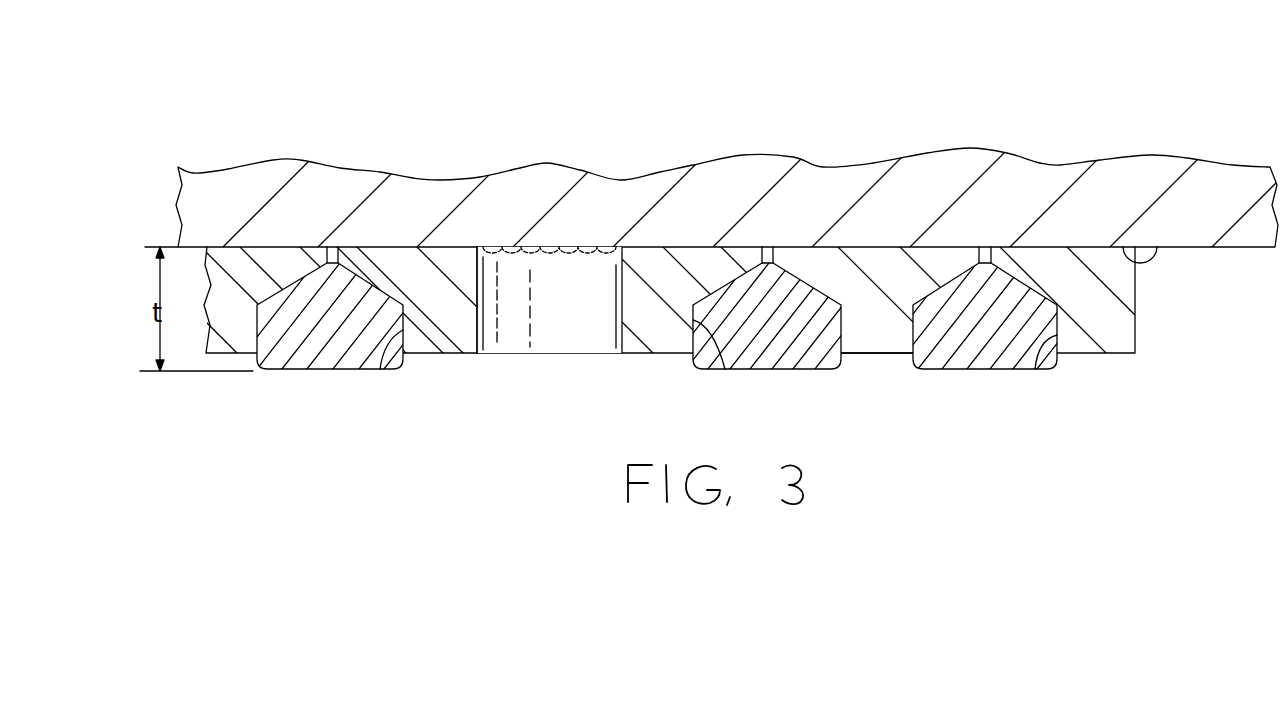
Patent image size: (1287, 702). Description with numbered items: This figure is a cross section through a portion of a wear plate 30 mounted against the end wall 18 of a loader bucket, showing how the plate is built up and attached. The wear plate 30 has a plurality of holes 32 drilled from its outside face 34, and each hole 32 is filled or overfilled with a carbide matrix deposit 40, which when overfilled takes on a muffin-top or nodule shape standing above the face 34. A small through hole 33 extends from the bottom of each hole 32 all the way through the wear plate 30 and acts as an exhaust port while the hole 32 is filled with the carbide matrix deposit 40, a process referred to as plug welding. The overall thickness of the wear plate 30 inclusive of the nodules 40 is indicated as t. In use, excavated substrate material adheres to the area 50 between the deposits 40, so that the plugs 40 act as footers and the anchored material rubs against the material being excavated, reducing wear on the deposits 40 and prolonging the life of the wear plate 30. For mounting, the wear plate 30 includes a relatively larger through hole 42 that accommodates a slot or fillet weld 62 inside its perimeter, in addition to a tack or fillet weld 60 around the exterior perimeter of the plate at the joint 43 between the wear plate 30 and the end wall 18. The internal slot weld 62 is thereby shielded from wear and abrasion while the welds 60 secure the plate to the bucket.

The end wall 18 is at (1205, 235).
The wear plate 30 is at (1116, 364).
The hole 32 is at (380, 366).
The through hole 33 is at (334, 258).
The outside face 34 is at (440, 355).
The carbide matrix deposit 40 is at (350, 372).
The through hole 42 is at (618, 313).
The joint 43 is at (478, 251).
The area between deposits 50 is at (877, 362).
The fillet weld 60 is at (1150, 260).
The slot weld 62 is at (558, 258).